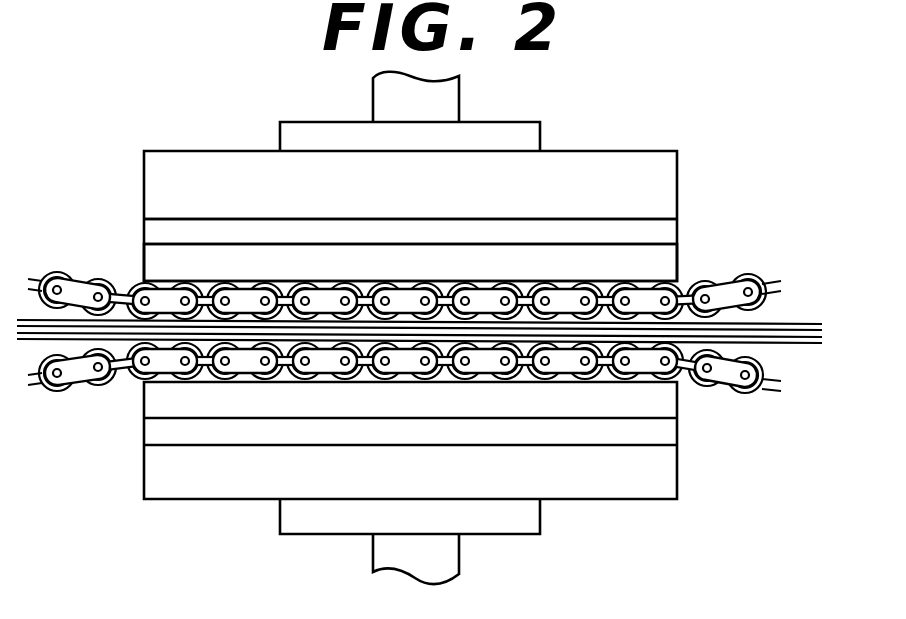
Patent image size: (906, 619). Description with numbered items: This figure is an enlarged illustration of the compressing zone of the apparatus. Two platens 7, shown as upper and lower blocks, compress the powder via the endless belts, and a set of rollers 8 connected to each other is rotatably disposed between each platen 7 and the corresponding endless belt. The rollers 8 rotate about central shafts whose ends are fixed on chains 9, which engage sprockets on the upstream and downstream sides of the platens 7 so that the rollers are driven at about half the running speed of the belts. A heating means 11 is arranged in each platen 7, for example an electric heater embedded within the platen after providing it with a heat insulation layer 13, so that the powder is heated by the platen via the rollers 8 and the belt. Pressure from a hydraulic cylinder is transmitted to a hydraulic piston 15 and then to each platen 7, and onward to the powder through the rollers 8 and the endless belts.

The platen 7 is at (211, 153).
The hydraulic piston 15 is at (453, 98).
The heat insulation layer 13 is at (657, 232).
The heating means 11 is at (146, 263).
The rollers 8 is at (748, 273).
The chain 9 is at (722, 378).